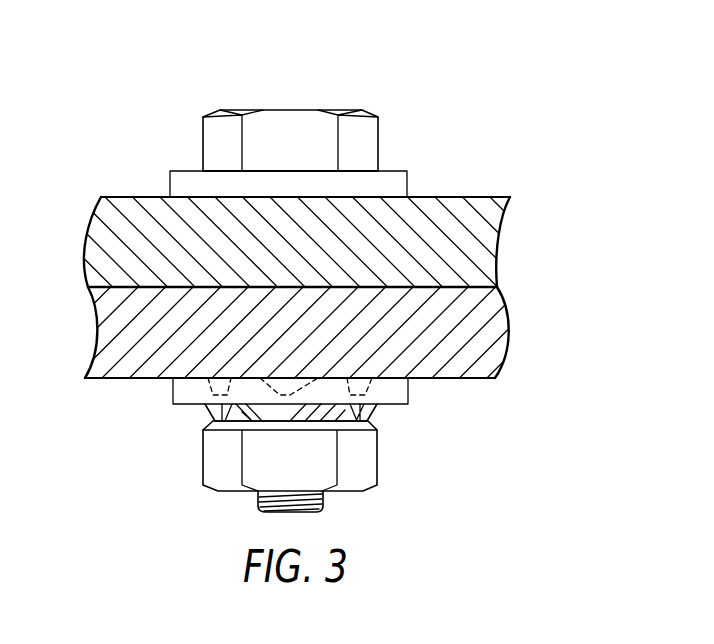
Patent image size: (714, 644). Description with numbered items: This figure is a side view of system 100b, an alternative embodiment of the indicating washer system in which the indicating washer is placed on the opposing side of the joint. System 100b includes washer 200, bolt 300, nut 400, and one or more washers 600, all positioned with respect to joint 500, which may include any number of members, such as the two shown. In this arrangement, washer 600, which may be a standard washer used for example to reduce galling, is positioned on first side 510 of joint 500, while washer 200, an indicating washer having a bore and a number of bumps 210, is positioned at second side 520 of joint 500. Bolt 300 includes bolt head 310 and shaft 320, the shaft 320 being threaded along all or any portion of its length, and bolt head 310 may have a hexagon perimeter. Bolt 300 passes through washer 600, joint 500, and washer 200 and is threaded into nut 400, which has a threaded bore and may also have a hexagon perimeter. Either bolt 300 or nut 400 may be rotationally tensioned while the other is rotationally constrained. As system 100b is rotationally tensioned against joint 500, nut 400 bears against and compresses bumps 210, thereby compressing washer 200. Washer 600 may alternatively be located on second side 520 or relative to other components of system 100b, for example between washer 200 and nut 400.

The system 100b is at (146, 436).
The washer 200 is at (345, 416).
The bumps 210 is at (371, 410).
The bolt 300 is at (321, 286).
The bolt head 310 is at (378, 133).
The shaft 320 is at (322, 498).
The nut 400 is at (379, 488).
The joint 500 is at (513, 275).
The first side 510 is at (485, 197).
The second side 520 is at (482, 381).
The washer 600 is at (409, 183).